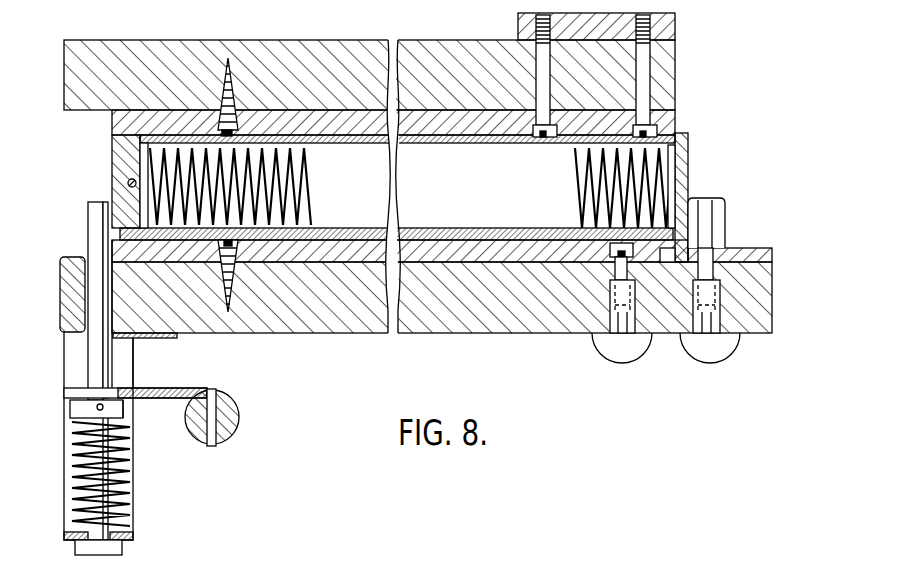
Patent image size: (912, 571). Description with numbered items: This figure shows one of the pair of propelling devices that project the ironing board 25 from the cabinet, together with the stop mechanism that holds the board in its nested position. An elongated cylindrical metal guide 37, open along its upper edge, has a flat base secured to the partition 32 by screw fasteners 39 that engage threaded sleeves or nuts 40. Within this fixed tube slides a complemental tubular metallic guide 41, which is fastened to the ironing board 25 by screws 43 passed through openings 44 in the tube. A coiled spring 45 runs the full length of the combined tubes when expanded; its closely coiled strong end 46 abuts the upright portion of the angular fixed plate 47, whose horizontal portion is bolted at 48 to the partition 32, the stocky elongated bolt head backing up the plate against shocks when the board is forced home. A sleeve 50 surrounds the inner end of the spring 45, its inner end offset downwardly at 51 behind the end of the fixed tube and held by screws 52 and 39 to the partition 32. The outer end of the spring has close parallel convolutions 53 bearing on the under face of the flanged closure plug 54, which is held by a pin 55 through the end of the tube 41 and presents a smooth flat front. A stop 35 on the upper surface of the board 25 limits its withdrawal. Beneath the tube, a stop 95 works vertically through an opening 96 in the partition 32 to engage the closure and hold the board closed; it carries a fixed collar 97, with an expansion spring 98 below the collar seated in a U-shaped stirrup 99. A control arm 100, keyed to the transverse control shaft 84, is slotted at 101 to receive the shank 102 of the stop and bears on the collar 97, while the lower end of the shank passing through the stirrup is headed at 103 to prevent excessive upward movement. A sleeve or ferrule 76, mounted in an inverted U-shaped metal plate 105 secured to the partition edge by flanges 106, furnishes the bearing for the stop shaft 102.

The ironing board 25 is at (307, 47).
The partition 32 is at (522, 327).
The stop 35 is at (518, 27).
The cylindrical metal guide 37 is at (330, 253).
The screw fastener 39 is at (612, 266).
The threaded sleeve or nut 40 is at (621, 338).
The tubular metallic guide 41 is at (358, 143).
The screw 43 is at (223, 80).
The opening 44 is at (243, 262).
The coiled spring 45 is at (309, 223).
The closely coiled end 46 is at (674, 166).
The angular fixed plate 47 is at (689, 186).
The bolt 48 is at (725, 229).
The sleeve 50 is at (506, 145).
The offset inner end 51 is at (672, 249).
The screw 52 is at (226, 263).
The close parallel convolutions 53 is at (158, 155).
The flanged closure plug 54 is at (117, 163).
The pin 55 is at (127, 186).
The sleeve or ferrule 76 is at (61, 300).
The control shaft 84 is at (240, 421).
The stop 95 is at (89, 226).
The opening 96 is at (62, 262).
The fixed collar 97 is at (125, 410).
The expansion spring 98 is at (74, 480).
The stirrup 99 is at (134, 496).
The control arm 100 is at (155, 391).
The slot 101 is at (72, 400).
The shank 102 is at (97, 371).
The head 103 is at (102, 553).
The inverted U-shaped metal plate 105 is at (69, 320).
The flange 106 is at (145, 338).